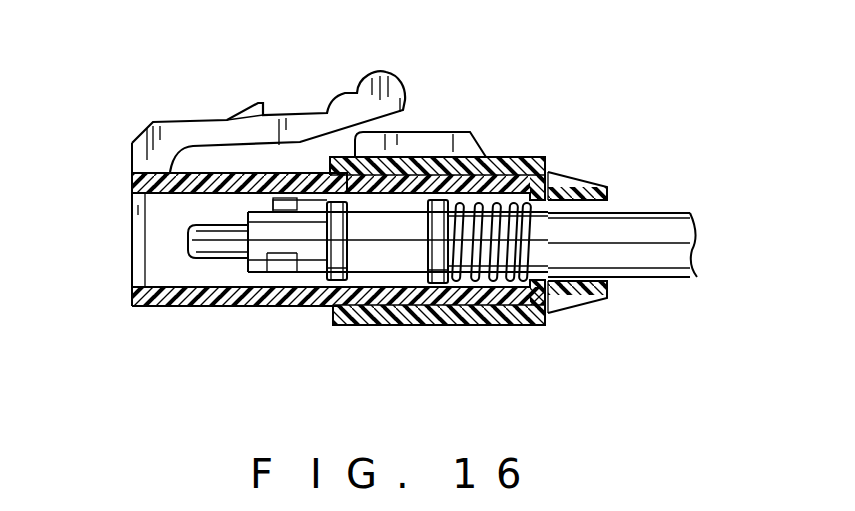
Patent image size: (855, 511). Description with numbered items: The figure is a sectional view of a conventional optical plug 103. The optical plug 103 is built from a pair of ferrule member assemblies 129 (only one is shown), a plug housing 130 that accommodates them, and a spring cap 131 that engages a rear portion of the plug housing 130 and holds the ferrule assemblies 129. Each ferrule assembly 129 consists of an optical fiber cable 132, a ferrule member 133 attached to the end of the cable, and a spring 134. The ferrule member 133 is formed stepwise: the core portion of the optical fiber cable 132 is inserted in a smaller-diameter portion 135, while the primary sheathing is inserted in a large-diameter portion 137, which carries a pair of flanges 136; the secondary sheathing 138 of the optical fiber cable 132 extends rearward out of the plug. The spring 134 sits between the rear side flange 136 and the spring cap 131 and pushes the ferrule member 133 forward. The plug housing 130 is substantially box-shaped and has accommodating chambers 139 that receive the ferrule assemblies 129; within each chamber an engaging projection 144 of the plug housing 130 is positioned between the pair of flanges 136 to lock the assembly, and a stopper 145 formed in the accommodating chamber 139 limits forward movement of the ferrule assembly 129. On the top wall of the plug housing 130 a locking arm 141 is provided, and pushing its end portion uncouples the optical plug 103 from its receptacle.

The optical plug 103 is at (522, 132).
The ferrule member assembly 129 is at (373, 278).
The plug housing 130 is at (163, 308).
The spring cap 131 is at (546, 318).
The optical fiber cable 132 is at (655, 208).
The ferrule member 133 is at (217, 282).
The spring 134 is at (473, 282).
The smaller-diameter portion 135 is at (188, 240).
The flange 136 is at (340, 282).
The large-diameter portion 137 is at (252, 255).
The secondary sheathing 138 is at (660, 268).
The accommodating chamber 139 is at (145, 265).
The locking arm 141 is at (198, 130).
The engaging projection 144 is at (367, 207).
The stopper 145 is at (277, 258).